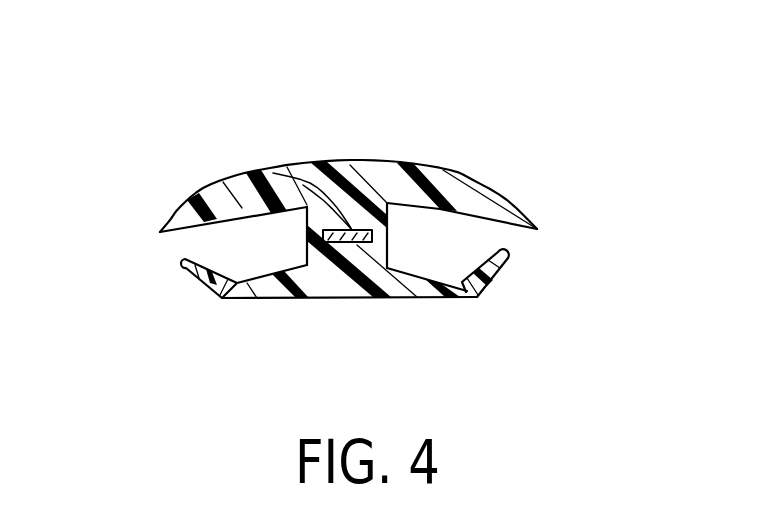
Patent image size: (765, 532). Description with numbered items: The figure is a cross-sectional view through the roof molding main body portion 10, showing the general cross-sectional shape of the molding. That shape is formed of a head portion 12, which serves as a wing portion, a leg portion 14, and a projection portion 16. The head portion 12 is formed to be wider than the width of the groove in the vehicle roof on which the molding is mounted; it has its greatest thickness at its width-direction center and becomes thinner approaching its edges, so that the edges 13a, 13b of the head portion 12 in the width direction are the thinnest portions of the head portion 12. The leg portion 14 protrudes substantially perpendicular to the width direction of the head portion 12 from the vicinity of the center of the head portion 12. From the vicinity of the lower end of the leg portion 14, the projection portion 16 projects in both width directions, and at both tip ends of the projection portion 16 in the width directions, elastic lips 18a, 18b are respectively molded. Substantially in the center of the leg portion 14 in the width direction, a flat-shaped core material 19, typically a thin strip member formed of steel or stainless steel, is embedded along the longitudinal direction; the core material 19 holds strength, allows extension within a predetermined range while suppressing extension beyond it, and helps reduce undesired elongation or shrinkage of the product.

The roof molding main body portion 10 is at (334, 193).
The head portion 12 is at (352, 178).
The edge of the head portion 13a is at (514, 206).
The edge of the head portion 13b is at (186, 210).
The leg portion 14 is at (469, 251).
The projection portion 16 is at (345, 280).
The elastic lip 18a is at (495, 278).
The elastic lip 18b is at (184, 266).
The core material 19 is at (268, 170).